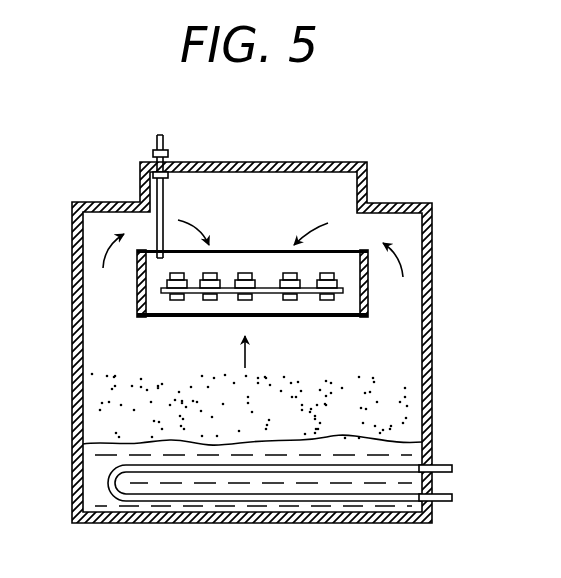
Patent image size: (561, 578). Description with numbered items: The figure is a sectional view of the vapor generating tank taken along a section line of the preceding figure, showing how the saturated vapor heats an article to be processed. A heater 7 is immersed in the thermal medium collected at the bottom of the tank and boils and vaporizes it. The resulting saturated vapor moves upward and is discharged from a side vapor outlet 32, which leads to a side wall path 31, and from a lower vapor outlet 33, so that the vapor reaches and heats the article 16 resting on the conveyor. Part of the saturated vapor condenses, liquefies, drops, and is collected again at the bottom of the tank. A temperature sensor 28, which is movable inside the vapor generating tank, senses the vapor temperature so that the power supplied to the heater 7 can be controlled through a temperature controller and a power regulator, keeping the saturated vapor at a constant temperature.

The heater 7 is at (443, 464).
The article to be processed 16 is at (190, 294).
The temperature sensor 28 is at (167, 201).
The side wall path 31 is at (403, 278).
The side vapor outlet 32 is at (360, 232).
The lower vapor outlet 33 is at (287, 318).